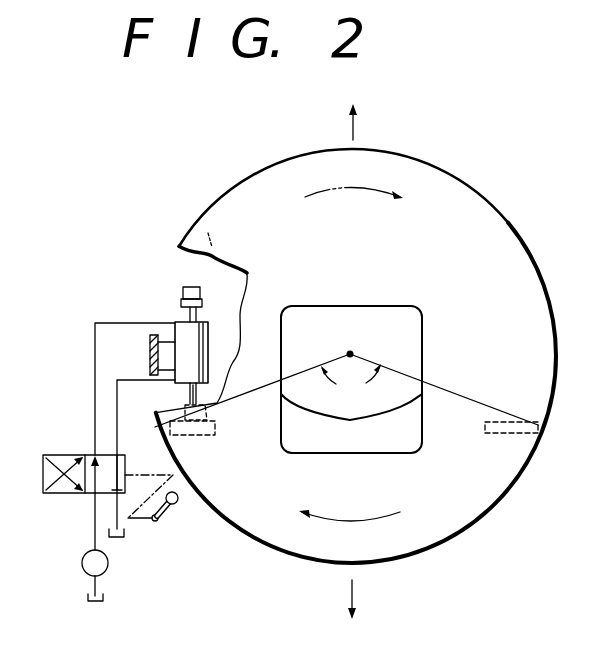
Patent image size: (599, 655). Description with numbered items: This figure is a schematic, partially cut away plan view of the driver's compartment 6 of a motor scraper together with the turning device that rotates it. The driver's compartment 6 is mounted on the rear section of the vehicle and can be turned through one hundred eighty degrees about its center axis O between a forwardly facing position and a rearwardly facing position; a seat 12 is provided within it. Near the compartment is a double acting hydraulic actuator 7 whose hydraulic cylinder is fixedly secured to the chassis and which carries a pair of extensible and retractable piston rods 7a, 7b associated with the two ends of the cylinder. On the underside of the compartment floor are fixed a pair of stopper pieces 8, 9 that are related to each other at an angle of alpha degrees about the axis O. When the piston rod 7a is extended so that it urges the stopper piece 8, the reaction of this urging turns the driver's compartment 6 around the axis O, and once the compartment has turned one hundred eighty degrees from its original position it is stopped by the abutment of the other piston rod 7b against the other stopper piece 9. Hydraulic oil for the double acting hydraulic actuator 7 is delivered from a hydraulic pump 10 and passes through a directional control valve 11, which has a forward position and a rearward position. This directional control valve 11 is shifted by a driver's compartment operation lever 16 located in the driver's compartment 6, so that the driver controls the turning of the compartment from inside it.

The driver's compartment 6 is at (503, 227).
The double acting hydraulic actuator 7 is at (208, 331).
The piston rod 7a is at (205, 420).
The piston rod 7b is at (181, 302).
The stopper piece 8 is at (192, 435).
The stopper piece 9 is at (484, 433).
The hydraulic pump 10 is at (86, 553).
The directional control valve 11 is at (85, 452).
The seat 12 is at (415, 329).
The driver's compartment operation lever 16 is at (167, 508).